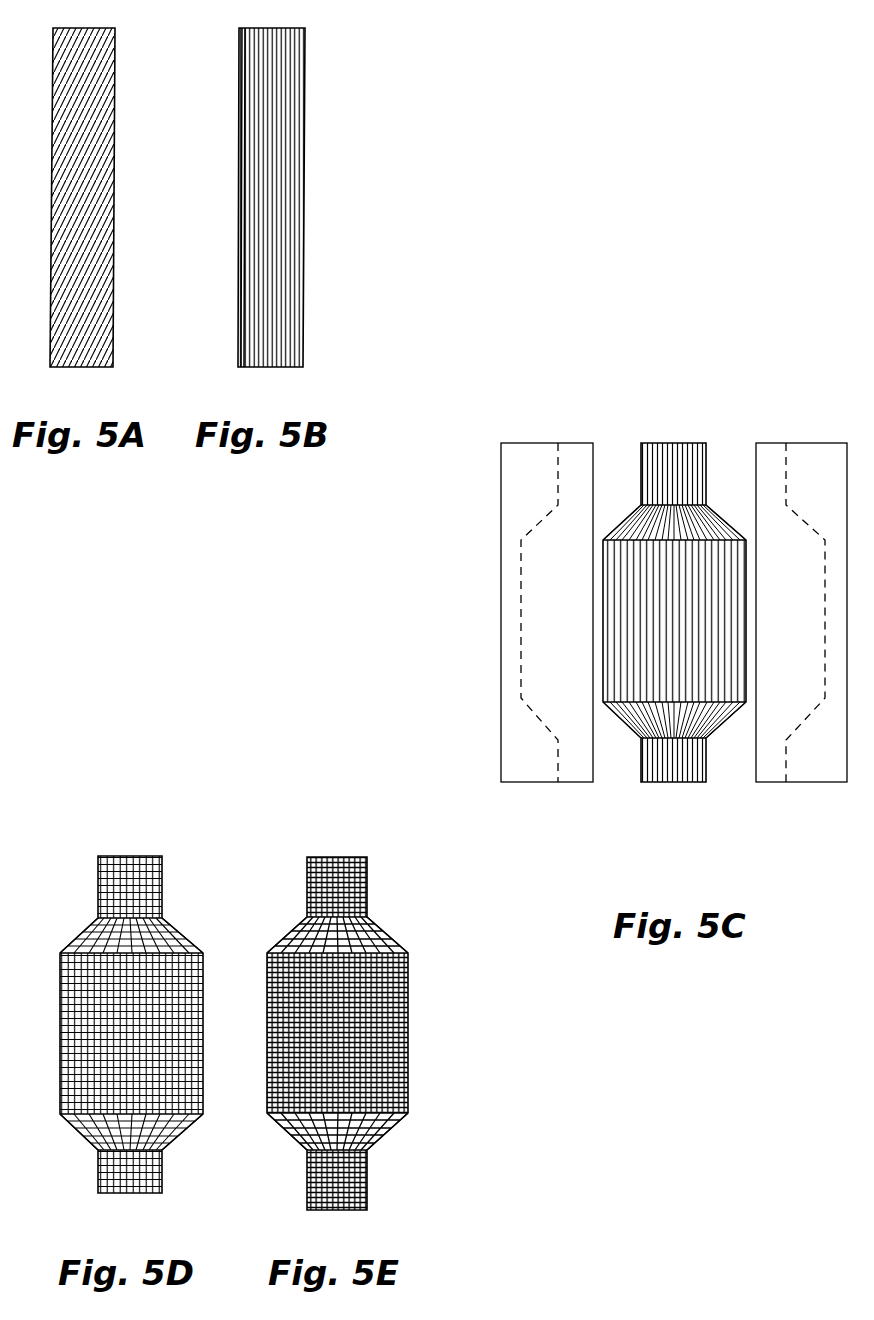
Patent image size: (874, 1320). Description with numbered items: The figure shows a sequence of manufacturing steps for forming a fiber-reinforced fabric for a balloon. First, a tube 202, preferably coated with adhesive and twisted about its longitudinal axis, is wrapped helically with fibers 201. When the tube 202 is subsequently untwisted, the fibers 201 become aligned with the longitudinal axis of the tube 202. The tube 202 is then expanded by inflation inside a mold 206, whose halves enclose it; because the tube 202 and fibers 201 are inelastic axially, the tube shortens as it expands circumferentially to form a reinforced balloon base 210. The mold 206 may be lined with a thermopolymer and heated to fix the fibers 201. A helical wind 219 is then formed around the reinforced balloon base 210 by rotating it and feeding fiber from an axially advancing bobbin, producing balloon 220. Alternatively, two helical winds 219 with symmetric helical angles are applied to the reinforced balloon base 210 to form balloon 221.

In FIG. 5A, the fibers 201 is at (102, 181).
In FIG. 5B, the fibers 201 is at (290, 181).
In FIG. 5C, the fibers 201 is at (618, 762).
In FIG. 5A, the tube 202 is at (117, 100).
In FIG. 5B, the tube 202 is at (303, 100).
In FIG. 5C, the tube 202 is at (705, 525).
In FIG. 5C, the mold 206 is at (515, 487).
In FIG. 5C, the reinforced balloon base 210 is at (637, 405).
In FIG. 5D, the helical wind 219 is at (177, 889).
In FIG. 5E, the helical wind 219 is at (385, 890).
In FIG. 5D, the balloon 220 is at (52, 862).
In FIG. 5E, the balloon 221 is at (378, 845).